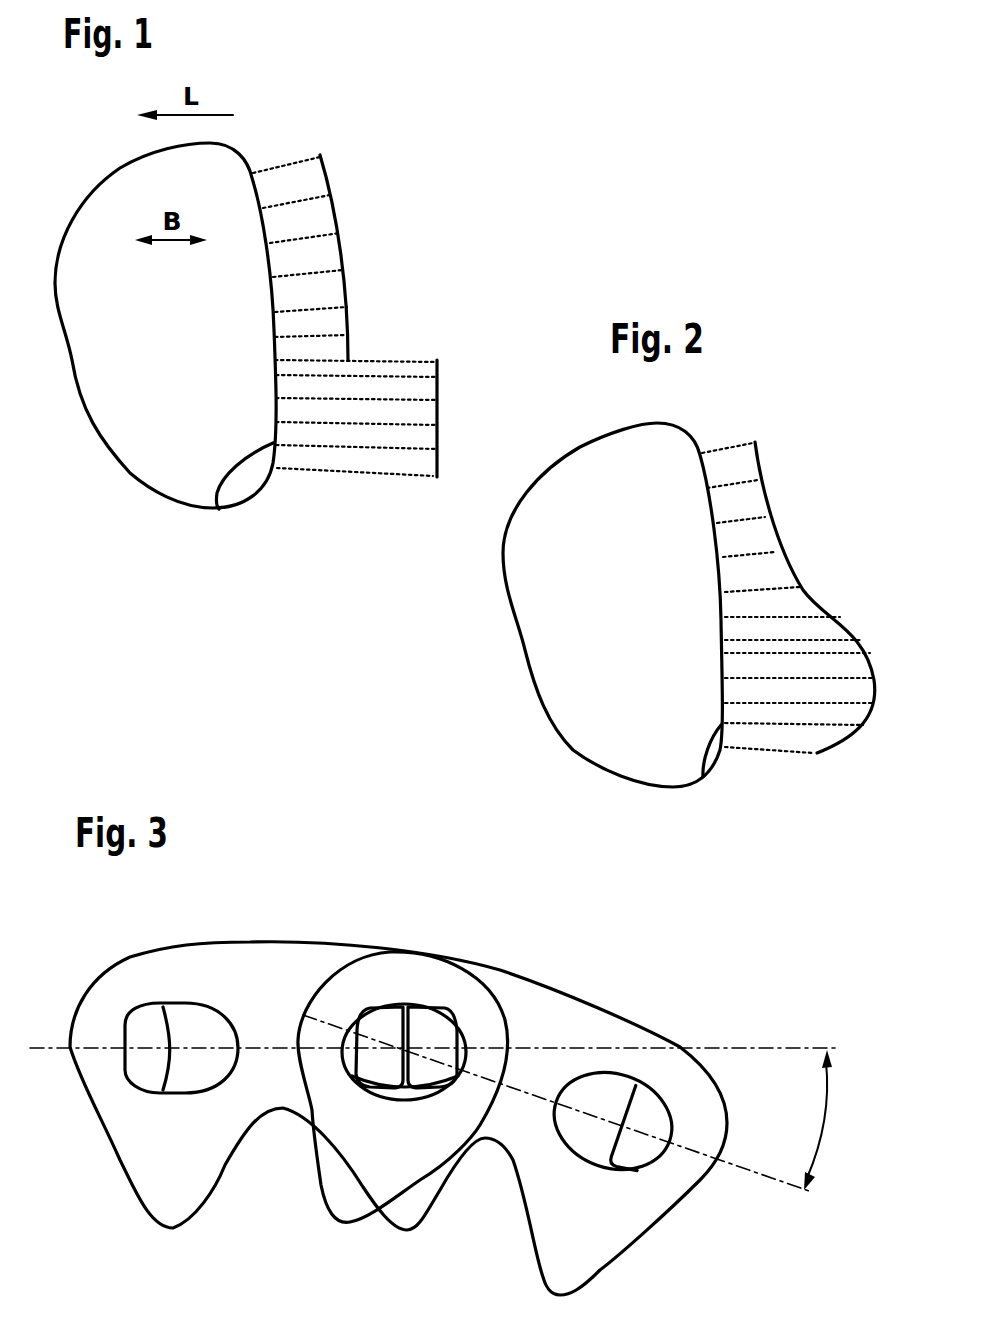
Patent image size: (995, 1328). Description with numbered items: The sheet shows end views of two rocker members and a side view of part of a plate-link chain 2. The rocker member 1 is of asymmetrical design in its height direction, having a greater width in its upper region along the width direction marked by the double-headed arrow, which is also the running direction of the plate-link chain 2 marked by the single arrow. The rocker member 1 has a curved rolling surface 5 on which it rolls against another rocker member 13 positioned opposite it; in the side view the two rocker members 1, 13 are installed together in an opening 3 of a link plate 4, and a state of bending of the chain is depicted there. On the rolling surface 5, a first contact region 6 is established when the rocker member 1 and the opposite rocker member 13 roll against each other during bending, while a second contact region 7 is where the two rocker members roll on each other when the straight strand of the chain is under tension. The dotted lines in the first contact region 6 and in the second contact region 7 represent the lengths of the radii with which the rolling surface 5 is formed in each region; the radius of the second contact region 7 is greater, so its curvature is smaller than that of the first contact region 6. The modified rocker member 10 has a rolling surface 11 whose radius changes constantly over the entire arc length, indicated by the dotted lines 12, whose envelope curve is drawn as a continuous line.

In FIG. 1, the rocker member 1 is at (128, 477).
In FIG. 3, the rocker member 1 is at (392, 1013).
In FIG. 3, the plate-link chain 2 is at (433, 1080).
In FIG. 3, the opening 3 is at (353, 1033).
In FIG. 3, the link plate 4 is at (262, 957).
In FIG. 1, the rolling surface 5 is at (217, 490).
In FIG. 1, the first contact region 6 is at (348, 243).
In FIG. 1, the second contact region 7 is at (437, 418).
In FIG. 2, the rocker member 10 is at (572, 752).
In FIG. 2, the rolling surface 11 is at (703, 777).
In FIG. 2, the dotted lines 12 is at (808, 617).
In FIG. 3, the rocker member 13 is at (433, 1030).